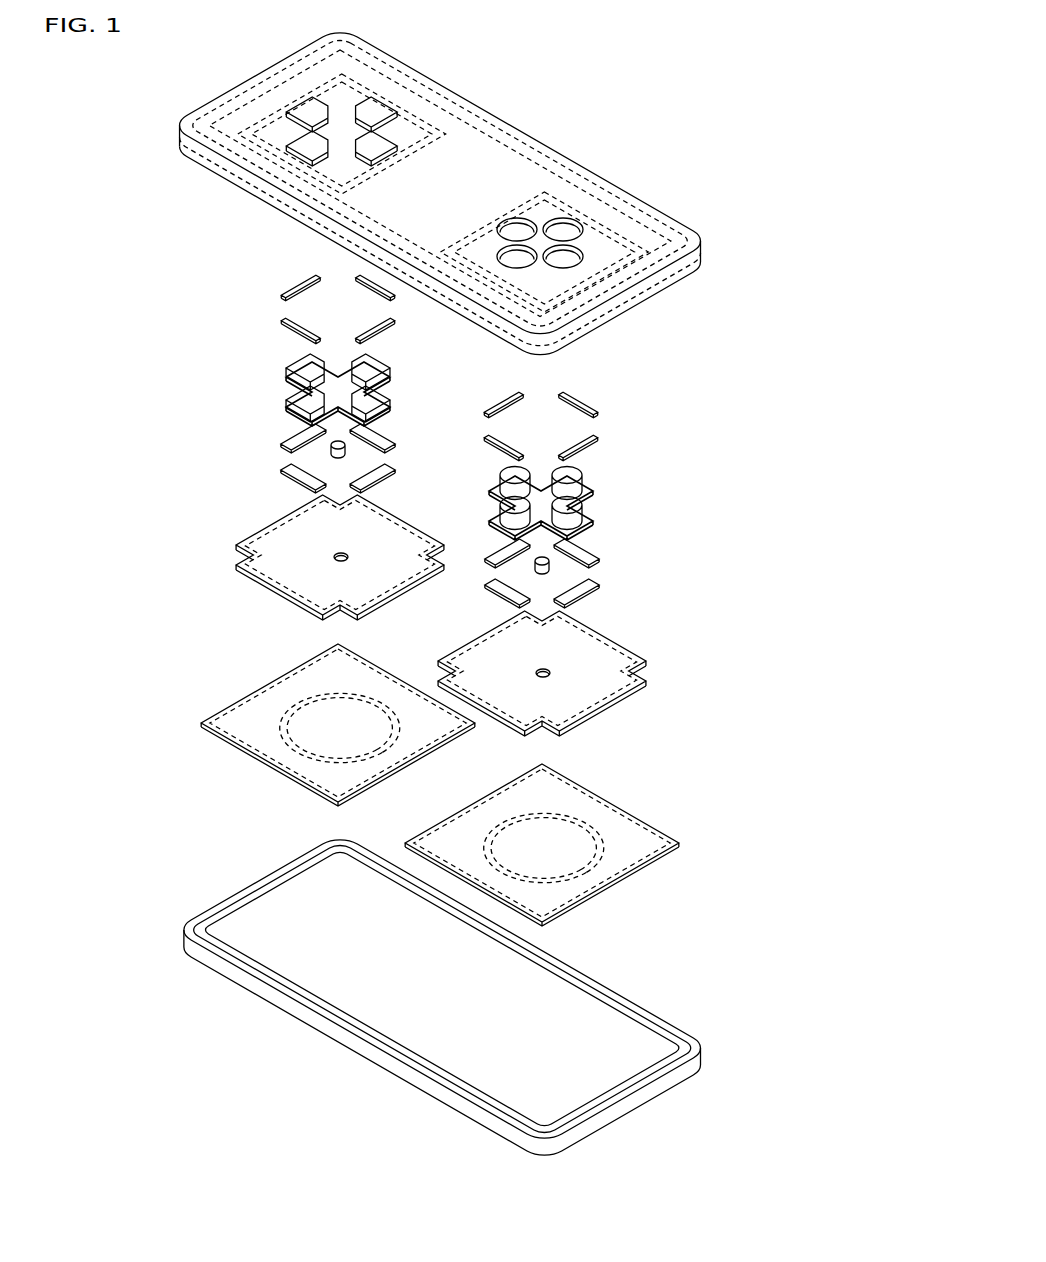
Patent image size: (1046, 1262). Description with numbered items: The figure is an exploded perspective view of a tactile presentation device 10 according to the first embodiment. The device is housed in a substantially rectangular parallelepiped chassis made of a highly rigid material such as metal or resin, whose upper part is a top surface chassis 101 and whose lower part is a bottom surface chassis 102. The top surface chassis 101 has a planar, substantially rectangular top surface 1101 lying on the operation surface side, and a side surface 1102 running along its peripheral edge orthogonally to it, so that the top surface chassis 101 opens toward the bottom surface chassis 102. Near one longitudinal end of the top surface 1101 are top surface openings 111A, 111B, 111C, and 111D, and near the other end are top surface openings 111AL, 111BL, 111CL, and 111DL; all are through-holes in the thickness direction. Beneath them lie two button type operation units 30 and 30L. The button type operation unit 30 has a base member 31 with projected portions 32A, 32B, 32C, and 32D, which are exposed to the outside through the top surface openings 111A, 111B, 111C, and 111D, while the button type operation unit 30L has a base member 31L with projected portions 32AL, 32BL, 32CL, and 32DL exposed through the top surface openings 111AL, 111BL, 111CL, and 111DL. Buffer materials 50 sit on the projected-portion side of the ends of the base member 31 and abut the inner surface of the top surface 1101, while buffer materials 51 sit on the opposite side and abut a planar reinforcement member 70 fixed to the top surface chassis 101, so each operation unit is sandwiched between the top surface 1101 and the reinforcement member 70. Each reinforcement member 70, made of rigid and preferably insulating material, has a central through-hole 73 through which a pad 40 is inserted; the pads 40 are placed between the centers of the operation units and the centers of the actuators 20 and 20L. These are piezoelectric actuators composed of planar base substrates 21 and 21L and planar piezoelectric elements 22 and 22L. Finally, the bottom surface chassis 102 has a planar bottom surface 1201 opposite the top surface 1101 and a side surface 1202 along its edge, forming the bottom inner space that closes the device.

The tactile presentation device 10 is at (707, 130).
The top surface chassis 101 is at (727, 187).
The top surface 1101 is at (632, 226).
The side surface 1102 is at (693, 266).
The top surface opening 111A is at (590, 267).
The top surface opening 111B is at (581, 216).
The top surface opening 111C is at (527, 214).
The top surface opening 111D is at (538, 270).
The top surface opening 111AL is at (371, 148).
The top surface opening 111BL is at (371, 114).
The top surface opening 111CL is at (312, 114).
The top surface opening 111DL is at (312, 148).
The actuator 20 is at (667, 780).
The base substrate 21 is at (632, 828).
The piezoelectric element 22 is at (600, 826).
The actuator 20L is at (215, 665).
The base substrate 21L is at (250, 722).
The piezoelectric element 22L is at (325, 690).
The button type operation unit 30 is at (656, 483).
The base member 31 is at (600, 523).
The projected portion 32A is at (575, 505).
The projected portion 32B is at (580, 477).
The projected portion 32C is at (505, 477).
The projected portion 32D is at (510, 505).
The button type operation unit 30L is at (225, 345).
The base member 31L is at (306, 384).
The projected portion 32AL is at (366, 404).
The projected portion 32BL is at (366, 372).
The projected portion 32CL is at (310, 372).
The projected portion 32DL is at (310, 404).
The pad 40 is at (333, 450).
The buffer material 50 is at (297, 326).
The buffer material 51 is at (303, 437).
The reinforcement member 70 is at (223, 522).
The through-hole 73 is at (320, 550).
The bottom surface chassis 102 is at (709, 979).
The bottom surface 1201 is at (612, 1032).
The side surface 1202 is at (668, 1038).